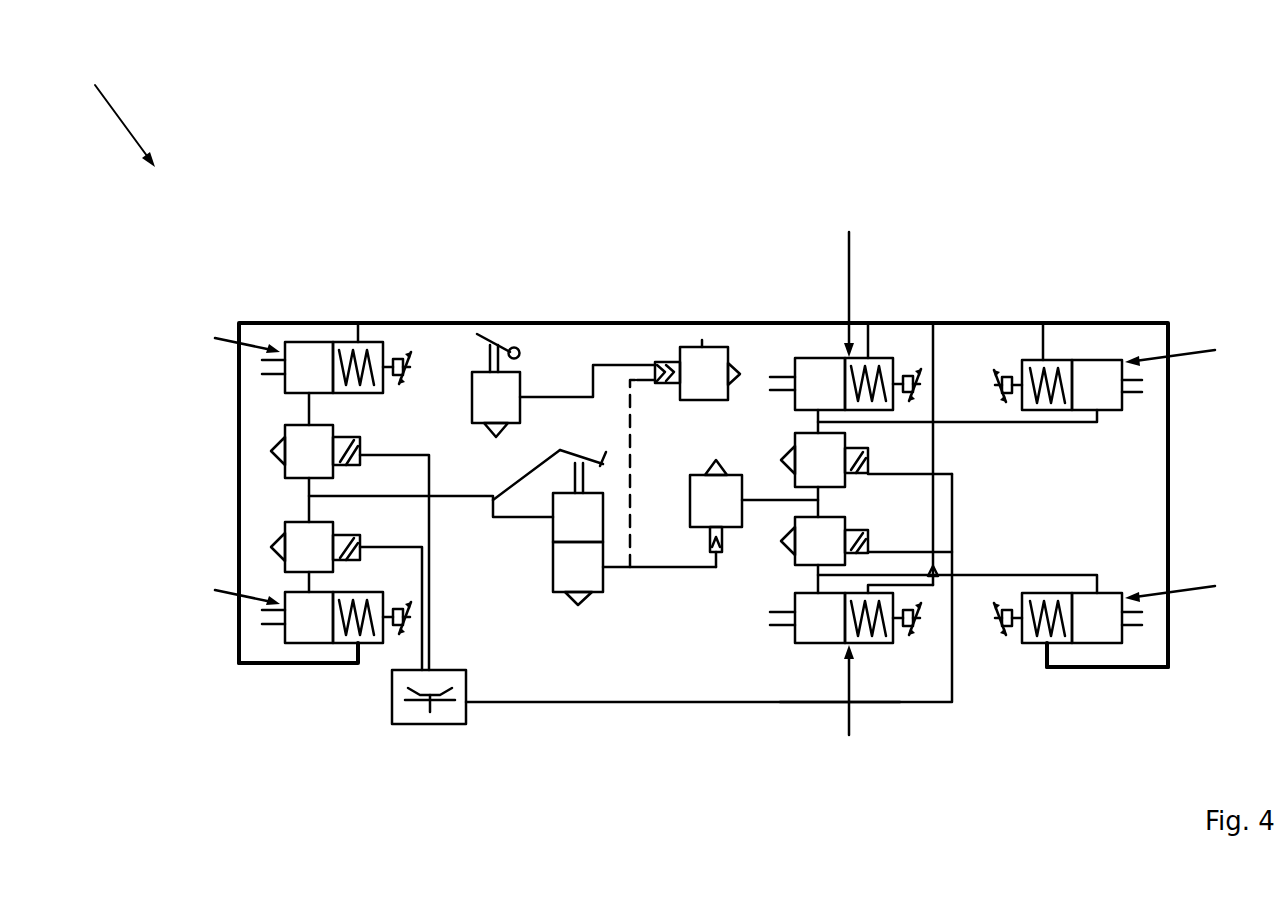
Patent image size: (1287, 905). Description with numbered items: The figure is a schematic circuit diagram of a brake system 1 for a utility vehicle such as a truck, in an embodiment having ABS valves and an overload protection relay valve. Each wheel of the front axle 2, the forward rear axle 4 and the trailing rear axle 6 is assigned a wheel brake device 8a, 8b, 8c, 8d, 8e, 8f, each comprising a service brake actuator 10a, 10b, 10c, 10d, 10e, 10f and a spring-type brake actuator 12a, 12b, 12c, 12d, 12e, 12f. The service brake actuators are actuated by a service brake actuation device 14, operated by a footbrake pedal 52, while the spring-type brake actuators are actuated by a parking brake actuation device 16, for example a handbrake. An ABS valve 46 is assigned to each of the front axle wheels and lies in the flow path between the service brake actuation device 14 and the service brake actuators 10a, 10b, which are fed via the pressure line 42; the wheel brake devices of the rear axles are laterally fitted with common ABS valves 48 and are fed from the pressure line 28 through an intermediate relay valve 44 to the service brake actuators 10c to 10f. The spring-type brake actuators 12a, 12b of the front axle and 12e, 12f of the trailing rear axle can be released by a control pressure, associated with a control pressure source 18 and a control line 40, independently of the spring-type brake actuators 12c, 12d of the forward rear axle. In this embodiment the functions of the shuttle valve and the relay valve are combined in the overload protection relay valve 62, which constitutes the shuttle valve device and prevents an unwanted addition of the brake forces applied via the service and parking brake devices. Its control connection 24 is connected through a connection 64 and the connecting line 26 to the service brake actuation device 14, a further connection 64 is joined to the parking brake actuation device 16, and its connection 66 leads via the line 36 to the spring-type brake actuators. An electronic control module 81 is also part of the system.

The brake system 1 is at (115, 111).
The front axle 2 is at (320, 704).
The rear axle 4 is at (876, 704).
The rear axle 6 is at (1077, 704).
The wheel brake device 8a is at (216, 336).
The wheel brake device 8b is at (216, 593).
The wheel brake device 8c is at (851, 278).
The wheel brake device 8d is at (852, 706).
The wheel brake device 8e is at (1188, 353).
The wheel brake device 8f is at (1185, 589).
The service brake actuator 10a is at (297, 342).
The service brake actuator 10b is at (292, 645).
The service brake actuator 10c is at (820, 357).
The service brake actuator 10d is at (815, 645).
The service brake actuator 10e is at (1105, 360).
The service brake actuator 10f is at (1100, 645).
The spring-type brake actuator 12a is at (366, 342).
The spring-type brake actuator 12b is at (368, 645).
The spring-type brake actuator 12c is at (881, 357).
The spring-type brake actuator 12d is at (880, 645).
The spring-type brake actuator 12e is at (1040, 323).
The spring-type brake actuator 12f is at (1040, 645).
The service brake actuation device 14 is at (557, 595).
The parking brake actuation device 16 is at (505, 345).
The control pressure source 18 is at (568, 560).
The control connection 24 is at (667, 386).
The connecting line 26 is at (568, 396).
The pressure line 28 is at (643, 568).
The line 36 is at (444, 323).
The control line 40 is at (630, 422).
The pressure line 42 is at (411, 583).
The relay valve 44 is at (737, 528).
The ABS valve 46 is at (271, 441).
The ABS valve 48 is at (872, 456).
The footbrake pedal 52 is at (493, 500).
The overload protection relay valve 62 is at (690, 347).
The connection 64 is at (661, 362).
The connection 66 is at (708, 347).
The electronic control module (ECU) 81 is at (448, 724).